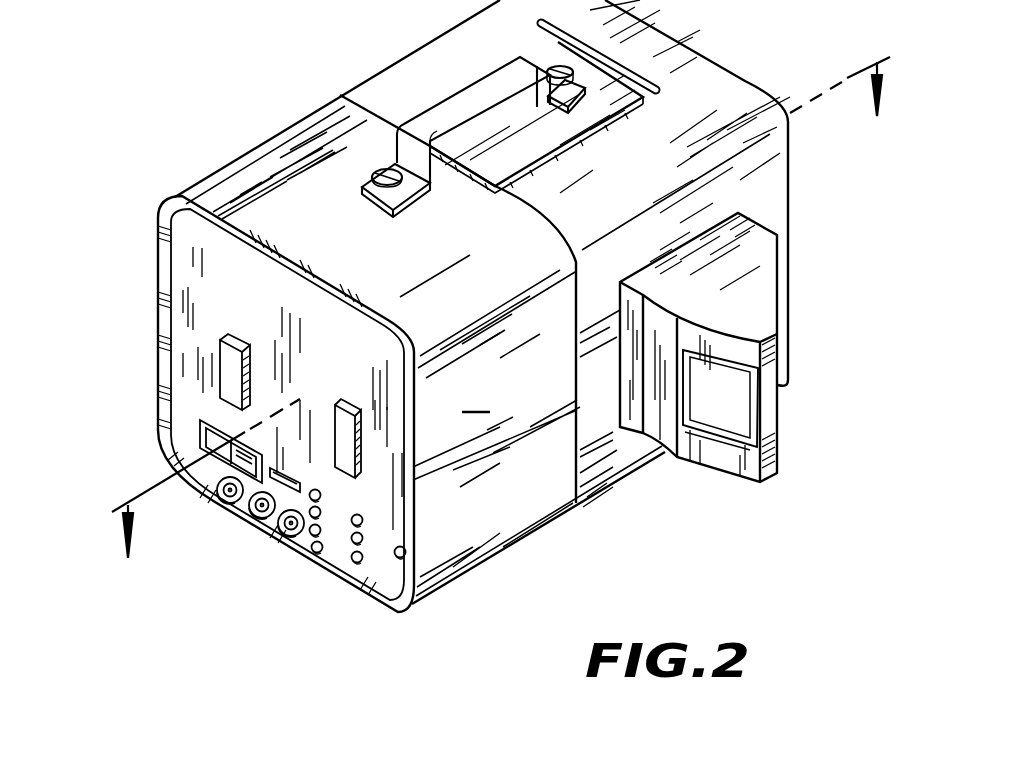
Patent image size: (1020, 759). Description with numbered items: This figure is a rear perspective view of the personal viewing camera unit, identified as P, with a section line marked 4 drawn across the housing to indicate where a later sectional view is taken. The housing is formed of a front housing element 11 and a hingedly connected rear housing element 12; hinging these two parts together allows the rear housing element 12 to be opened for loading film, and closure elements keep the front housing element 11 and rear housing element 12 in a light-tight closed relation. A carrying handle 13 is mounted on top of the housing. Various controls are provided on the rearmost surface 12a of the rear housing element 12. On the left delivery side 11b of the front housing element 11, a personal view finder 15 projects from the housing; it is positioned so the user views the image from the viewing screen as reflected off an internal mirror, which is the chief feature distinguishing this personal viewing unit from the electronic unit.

The front housing element 11 is at (641, 484).
The left delivery side 11b is at (784, 222).
The rear housing element 12 is at (535, 545).
The rearmost surface 12a is at (335, 545).
The carrying handle 13 is at (470, 98).
The personal view finder 15 is at (782, 438).
The section line 4- 4 is at (497, 281).